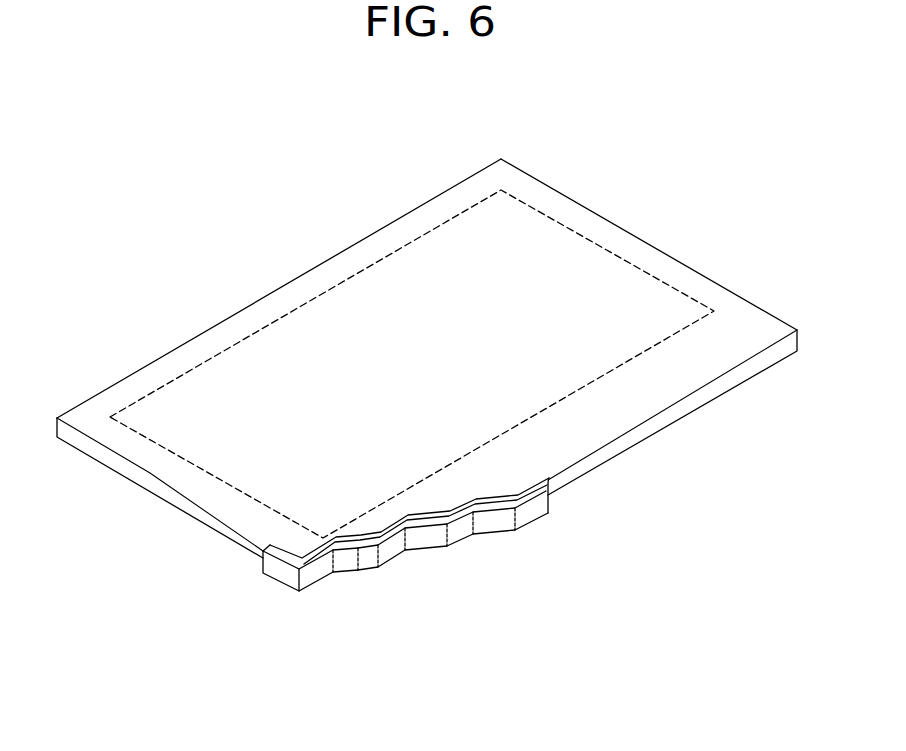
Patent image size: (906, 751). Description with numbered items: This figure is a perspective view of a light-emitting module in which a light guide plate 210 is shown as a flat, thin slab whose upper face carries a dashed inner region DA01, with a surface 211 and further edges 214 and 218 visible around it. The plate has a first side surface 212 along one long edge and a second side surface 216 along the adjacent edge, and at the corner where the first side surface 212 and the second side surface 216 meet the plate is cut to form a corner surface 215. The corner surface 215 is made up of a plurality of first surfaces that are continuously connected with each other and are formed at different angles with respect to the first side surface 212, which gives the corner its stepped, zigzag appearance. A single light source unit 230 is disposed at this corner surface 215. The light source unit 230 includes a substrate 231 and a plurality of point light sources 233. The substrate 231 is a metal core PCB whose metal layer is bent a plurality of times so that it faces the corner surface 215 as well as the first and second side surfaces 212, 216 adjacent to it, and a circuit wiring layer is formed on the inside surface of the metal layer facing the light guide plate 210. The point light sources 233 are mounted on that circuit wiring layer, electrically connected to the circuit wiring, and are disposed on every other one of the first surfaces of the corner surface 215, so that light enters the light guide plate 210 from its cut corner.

The light guide plate 210 is at (140, 338).
The first surface of display panel 211 is at (393, 289).
The first side surface 212 is at (652, 425).
The first side surface 214 is at (268, 296).
The corner surface 215 is at (418, 514).
The second side surface 216 is at (153, 484).
The fourth side surface 218 is at (655, 248).
The display area DA01 is at (431, 232).
The light source unit 230 is at (399, 640).
The substrate 231 is at (316, 575).
The point light sources 233 is at (360, 558).